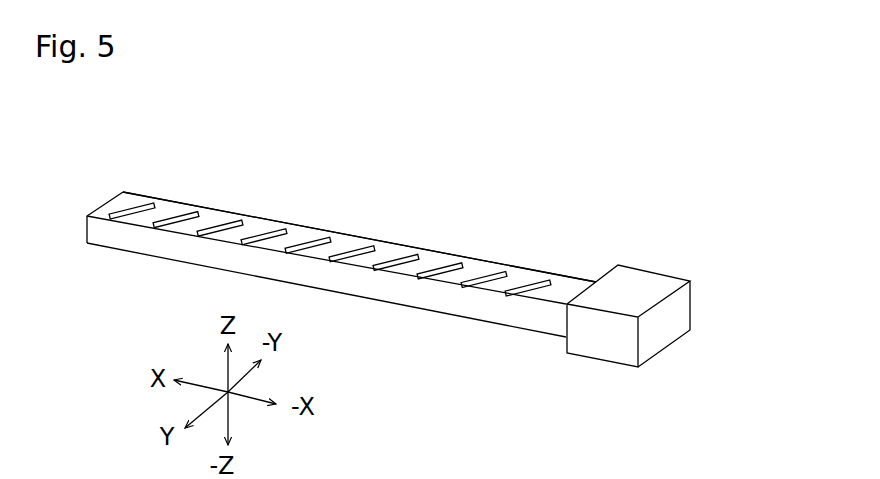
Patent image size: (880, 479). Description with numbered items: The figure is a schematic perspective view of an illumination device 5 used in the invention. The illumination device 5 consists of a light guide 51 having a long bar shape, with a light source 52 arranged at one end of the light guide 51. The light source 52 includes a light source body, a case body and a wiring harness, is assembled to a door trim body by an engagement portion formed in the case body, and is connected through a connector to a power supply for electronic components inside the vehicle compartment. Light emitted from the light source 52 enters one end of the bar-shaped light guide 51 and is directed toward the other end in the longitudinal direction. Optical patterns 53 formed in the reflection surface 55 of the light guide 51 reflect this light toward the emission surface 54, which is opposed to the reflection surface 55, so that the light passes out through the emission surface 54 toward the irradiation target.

The illumination device 5 is at (388, 273).
The light guide 51 is at (300, 228).
The light source 52 is at (597, 340).
The optical pattern 53 is at (404, 268).
The emission surface 54 is at (358, 297).
The reflection surface 55 is at (478, 261).